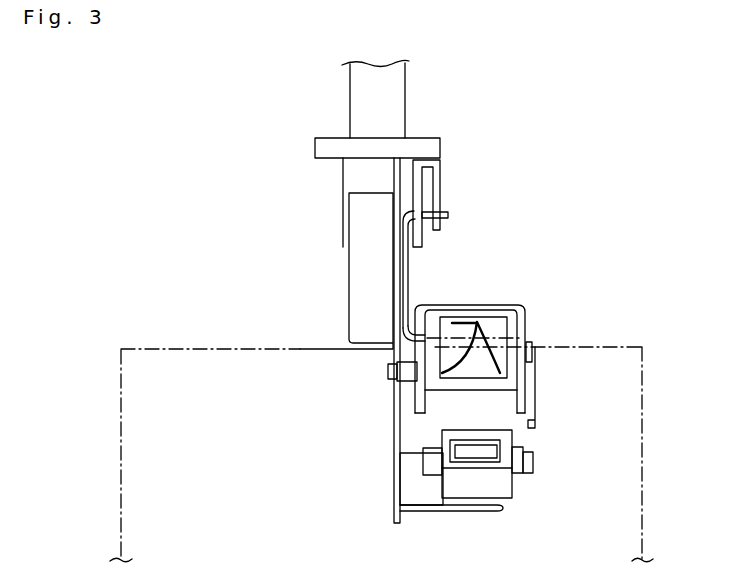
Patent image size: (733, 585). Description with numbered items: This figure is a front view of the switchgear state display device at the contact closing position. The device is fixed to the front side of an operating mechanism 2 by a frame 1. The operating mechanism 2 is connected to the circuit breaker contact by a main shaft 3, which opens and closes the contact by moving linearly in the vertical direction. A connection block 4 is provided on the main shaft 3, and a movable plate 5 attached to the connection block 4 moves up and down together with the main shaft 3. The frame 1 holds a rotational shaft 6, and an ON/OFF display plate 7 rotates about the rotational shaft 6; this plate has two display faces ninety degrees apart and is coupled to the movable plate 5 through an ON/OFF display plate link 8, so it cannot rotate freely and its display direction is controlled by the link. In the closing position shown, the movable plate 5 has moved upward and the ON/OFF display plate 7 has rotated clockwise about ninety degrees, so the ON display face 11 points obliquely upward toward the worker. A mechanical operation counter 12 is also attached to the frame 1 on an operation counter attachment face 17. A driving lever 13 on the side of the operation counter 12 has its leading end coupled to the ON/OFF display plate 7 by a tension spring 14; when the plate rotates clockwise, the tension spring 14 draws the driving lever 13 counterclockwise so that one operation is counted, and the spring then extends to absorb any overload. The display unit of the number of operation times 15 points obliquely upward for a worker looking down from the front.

The frame 1 is at (355, 271).
The operating mechanism 2 is at (128, 377).
The main shaft 3 is at (405, 87).
The connection block 4 is at (440, 151).
The movable plate 5 is at (436, 184).
The rotational shaft 6 is at (388, 368).
The ON/OFF display plate 7 is at (525, 326).
The ON/OFF display plate link 8 is at (408, 270).
The ON display face 11 is at (490, 317).
The mechanical operation counter 12 is at (487, 488).
The driving lever 13 is at (533, 462).
The tension spring 14 is at (535, 400).
The display unit of the number of operation times 15 is at (502, 452).
The operation counter attachment face 17 is at (428, 511).